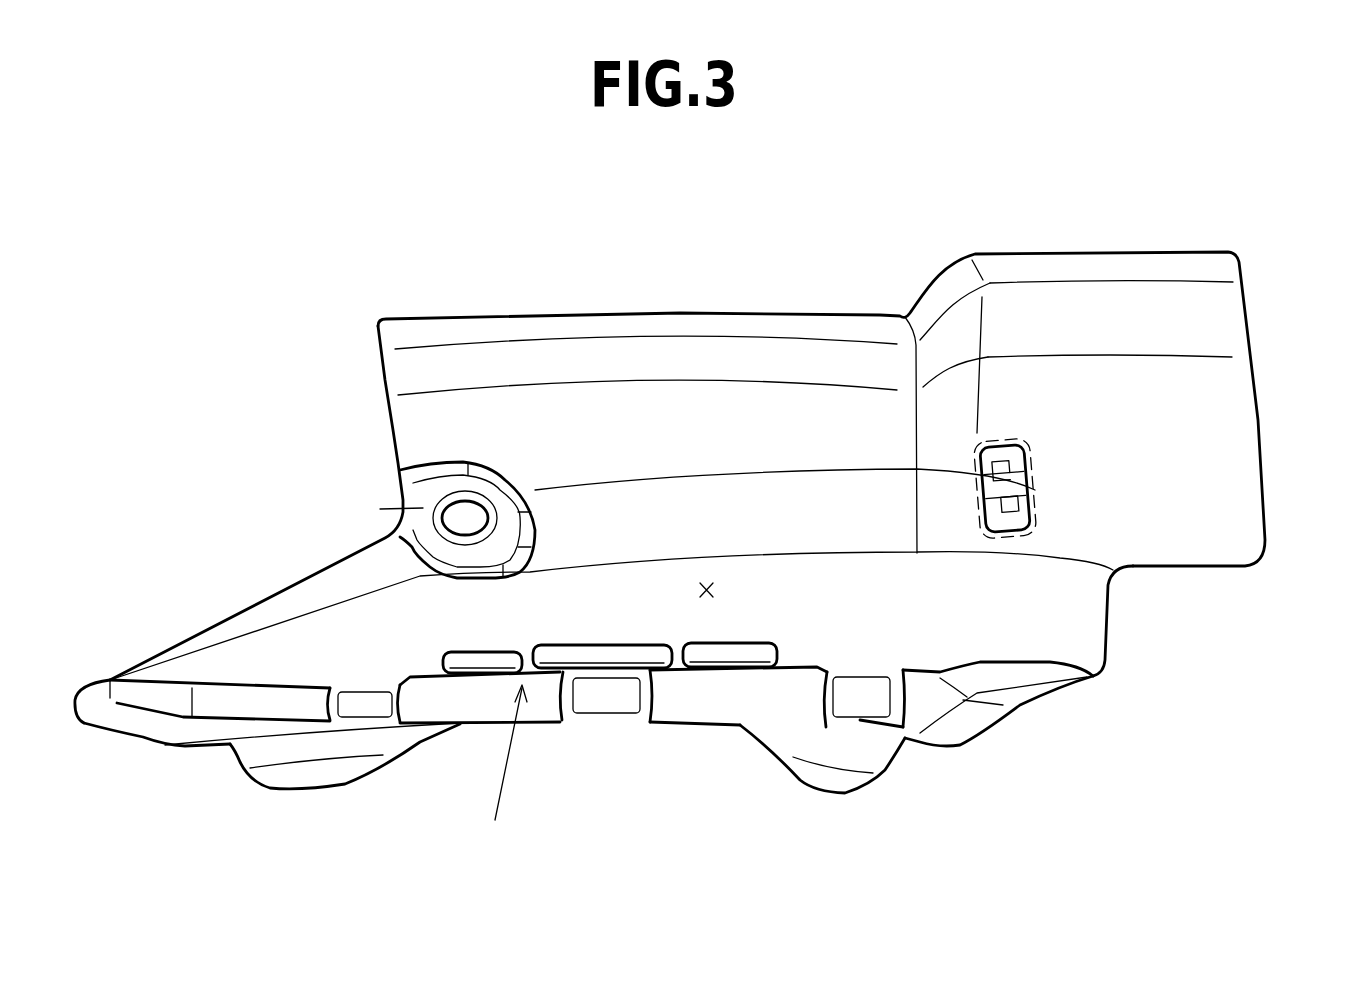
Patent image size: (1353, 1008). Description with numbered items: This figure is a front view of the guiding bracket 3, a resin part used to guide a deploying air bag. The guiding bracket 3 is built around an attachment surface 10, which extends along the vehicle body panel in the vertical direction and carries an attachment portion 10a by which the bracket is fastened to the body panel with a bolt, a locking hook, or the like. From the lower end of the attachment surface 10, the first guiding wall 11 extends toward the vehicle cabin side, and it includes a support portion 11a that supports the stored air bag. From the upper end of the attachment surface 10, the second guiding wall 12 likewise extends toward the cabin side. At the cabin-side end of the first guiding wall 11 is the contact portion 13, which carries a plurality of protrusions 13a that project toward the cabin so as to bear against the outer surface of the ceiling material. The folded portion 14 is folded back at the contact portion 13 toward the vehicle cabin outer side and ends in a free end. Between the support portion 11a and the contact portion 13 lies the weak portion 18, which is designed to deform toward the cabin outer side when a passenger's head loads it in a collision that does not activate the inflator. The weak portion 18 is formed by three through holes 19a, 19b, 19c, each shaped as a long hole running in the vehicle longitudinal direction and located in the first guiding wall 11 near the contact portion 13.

The guiding bracket 3 is at (1034, 231).
The attachment surface 10 is at (1218, 407).
The attachment portion 10a is at (397, 512).
The first guiding wall 11 is at (1027, 613).
The support portion 11a is at (713, 590).
The second guiding wall 12 is at (672, 356).
The contact portion 13 is at (690, 698).
The protrusions 13a is at (362, 705).
The folded portion 14 is at (292, 780).
The weak portion 18 is at (504, 774).
The through hole 19a is at (550, 668).
The through hole 19b is at (490, 668).
The through hole 19c is at (733, 660).